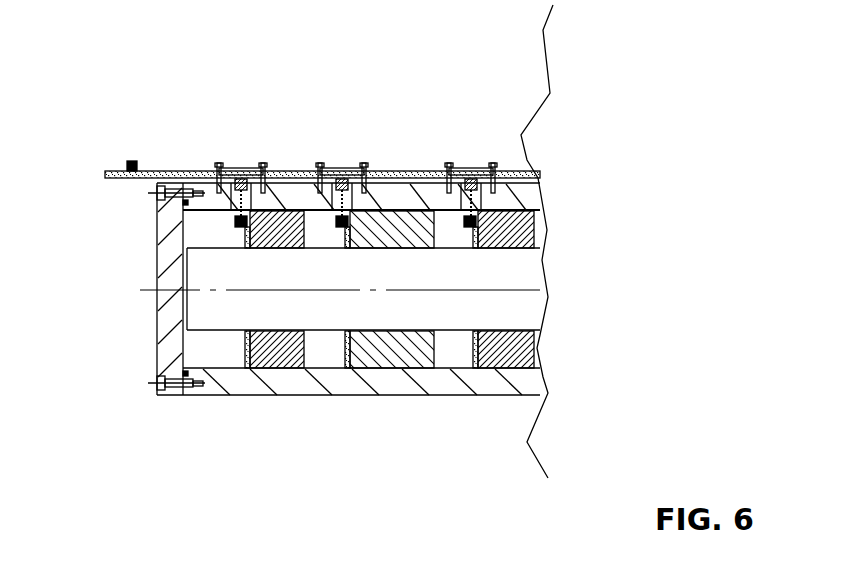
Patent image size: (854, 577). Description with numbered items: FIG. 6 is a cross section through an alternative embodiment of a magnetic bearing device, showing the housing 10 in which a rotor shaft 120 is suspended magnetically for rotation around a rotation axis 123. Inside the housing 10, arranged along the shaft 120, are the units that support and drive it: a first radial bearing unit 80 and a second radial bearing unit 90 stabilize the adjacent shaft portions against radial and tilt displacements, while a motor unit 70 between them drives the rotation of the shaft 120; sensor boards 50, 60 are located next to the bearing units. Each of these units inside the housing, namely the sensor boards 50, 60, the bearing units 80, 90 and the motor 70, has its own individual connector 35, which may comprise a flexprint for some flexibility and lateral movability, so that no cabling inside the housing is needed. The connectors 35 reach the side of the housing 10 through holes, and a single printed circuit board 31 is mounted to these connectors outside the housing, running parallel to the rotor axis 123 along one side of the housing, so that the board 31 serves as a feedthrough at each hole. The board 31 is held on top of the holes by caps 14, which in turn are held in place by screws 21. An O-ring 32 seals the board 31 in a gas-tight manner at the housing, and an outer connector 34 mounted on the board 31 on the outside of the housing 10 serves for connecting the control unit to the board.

The housing 10 is at (124, 355).
The caps 14 is at (352, 170).
The screws 21 is at (228, 170).
The printed circuit board 31 is at (177, 170).
The O-ring 32 is at (332, 168).
The outer connector 34 is at (137, 160).
The connector 35 is at (476, 172).
The sensor board 50 is at (248, 170).
The sensor board 60 is at (478, 172).
The motor unit 70 is at (396, 211).
The first radial bearing unit 80 is at (276, 357).
The second radial bearing unit 90 is at (512, 347).
The rotor shaft 120 is at (516, 312).
The rotation axis 123 is at (165, 292).